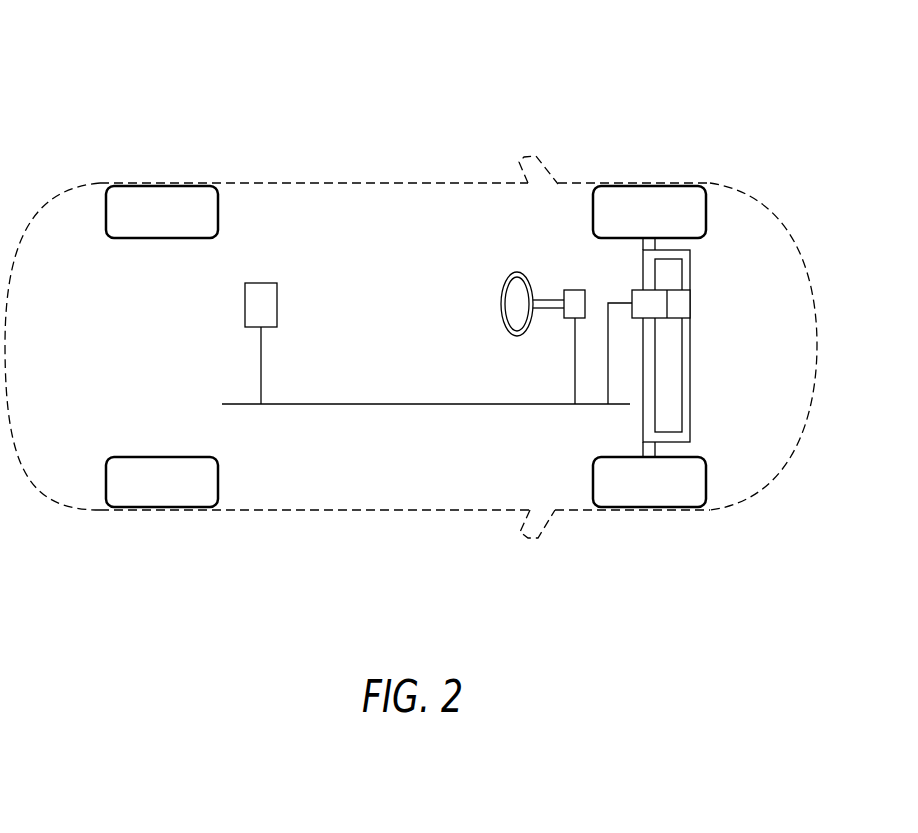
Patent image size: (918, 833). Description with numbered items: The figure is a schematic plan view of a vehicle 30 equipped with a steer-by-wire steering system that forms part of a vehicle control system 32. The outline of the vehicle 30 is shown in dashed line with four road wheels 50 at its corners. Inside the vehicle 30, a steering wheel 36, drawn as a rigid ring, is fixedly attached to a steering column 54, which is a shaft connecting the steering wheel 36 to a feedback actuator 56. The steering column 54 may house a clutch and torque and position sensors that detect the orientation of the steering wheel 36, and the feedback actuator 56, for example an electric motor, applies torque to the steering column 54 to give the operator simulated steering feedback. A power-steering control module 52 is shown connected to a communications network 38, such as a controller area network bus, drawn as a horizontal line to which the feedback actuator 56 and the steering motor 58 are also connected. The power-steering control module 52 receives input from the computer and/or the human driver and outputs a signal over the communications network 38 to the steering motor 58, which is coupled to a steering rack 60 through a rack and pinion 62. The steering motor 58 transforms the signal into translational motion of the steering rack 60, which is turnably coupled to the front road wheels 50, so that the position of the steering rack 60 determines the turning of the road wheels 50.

The vehicle 30 is at (123, 68).
The vehicle control system 32 is at (612, 146).
The steering wheel 36 is at (503, 290).
The communications network 38 is at (360, 405).
The road wheels 50 is at (186, 192).
The power-steering control module 52 is at (277, 293).
The steering column 54 is at (548, 311).
The feedback actuator 56 is at (570, 289).
The steering motor 58 is at (634, 290).
The steering rack 60 is at (692, 358).
The rack and pinion 62 is at (692, 302).